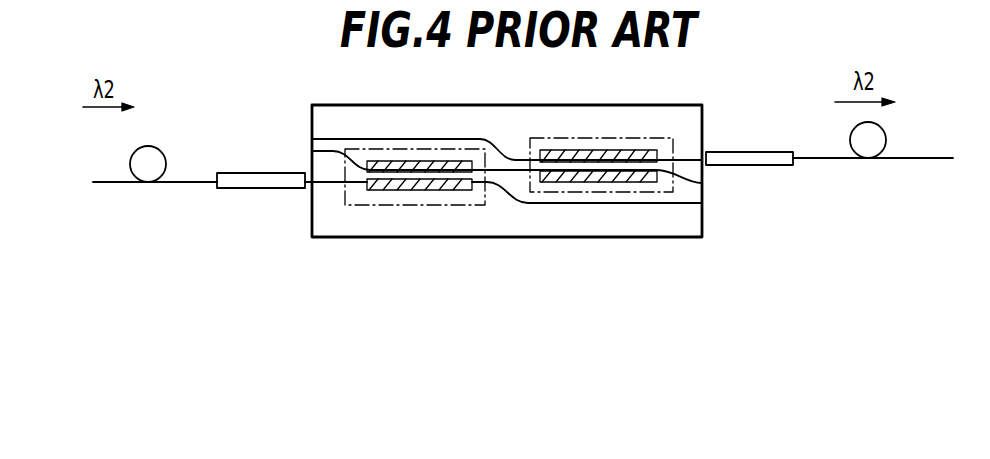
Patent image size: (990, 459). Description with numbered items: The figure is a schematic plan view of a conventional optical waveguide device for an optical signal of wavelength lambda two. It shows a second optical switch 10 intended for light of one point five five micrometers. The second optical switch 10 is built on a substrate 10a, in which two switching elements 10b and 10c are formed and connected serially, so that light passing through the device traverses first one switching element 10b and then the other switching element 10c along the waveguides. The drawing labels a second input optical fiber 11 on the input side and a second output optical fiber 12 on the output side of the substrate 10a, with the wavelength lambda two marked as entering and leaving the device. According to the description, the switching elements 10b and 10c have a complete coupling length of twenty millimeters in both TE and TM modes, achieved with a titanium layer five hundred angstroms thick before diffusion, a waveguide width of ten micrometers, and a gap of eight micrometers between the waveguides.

The second optical switch 10 is at (515, 240).
The substrate 10a is at (655, 233).
The switching element 10b is at (410, 198).
The switching element 10c is at (545, 141).
The second input optical fiber 11 is at (247, 188).
The second output optical fiber 12 is at (765, 165).